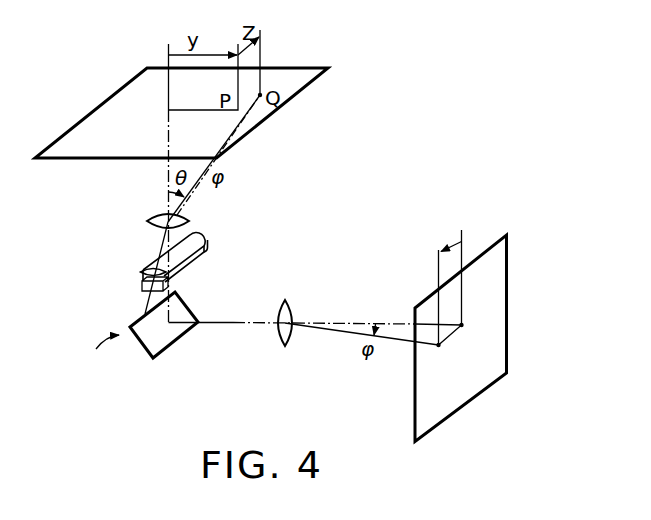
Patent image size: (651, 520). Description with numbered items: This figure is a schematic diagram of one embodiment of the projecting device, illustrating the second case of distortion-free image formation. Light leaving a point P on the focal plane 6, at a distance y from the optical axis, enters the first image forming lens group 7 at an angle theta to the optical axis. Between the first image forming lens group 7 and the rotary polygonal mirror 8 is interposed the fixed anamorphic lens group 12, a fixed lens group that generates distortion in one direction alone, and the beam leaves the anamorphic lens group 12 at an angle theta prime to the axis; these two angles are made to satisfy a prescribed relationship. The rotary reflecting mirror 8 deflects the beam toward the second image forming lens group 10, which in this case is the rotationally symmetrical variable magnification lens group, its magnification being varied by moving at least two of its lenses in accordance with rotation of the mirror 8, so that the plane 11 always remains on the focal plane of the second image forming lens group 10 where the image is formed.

The focal plane 6 is at (313, 75).
The first image forming lens group 7 is at (190, 219).
The rotary reflecting mirror 8 is at (152, 358).
The second image forming lens group 10 is at (282, 343).
The focal plane 11 is at (506, 362).
The fixed anamorphic lens group 12 is at (137, 258).